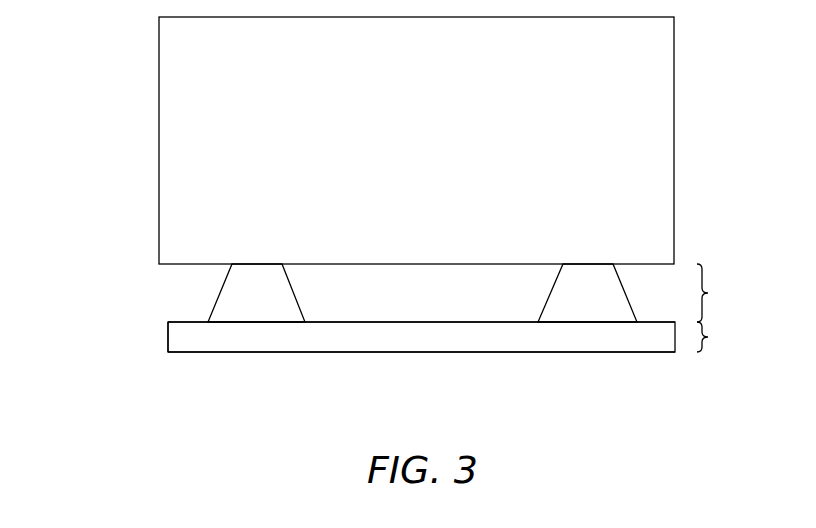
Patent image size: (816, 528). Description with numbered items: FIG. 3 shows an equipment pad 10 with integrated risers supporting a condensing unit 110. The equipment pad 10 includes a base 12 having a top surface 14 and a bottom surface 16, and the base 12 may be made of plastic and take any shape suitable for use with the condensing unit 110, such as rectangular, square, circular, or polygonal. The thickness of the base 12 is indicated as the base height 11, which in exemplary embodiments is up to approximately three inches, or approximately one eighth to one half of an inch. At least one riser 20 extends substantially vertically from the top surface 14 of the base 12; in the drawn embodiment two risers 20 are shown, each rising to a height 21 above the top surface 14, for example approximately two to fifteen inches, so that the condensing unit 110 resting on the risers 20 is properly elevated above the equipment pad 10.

The condensing unit 110 is at (443, 141).
The equipment pad 10 is at (676, 367).
The riser 20 is at (619, 276).
The height 21 is at (729, 293).
The base height 11 is at (730, 333).
The top surface 14 is at (187, 322).
The base 12 is at (168, 352).
The bottom surface 16 is at (318, 352).